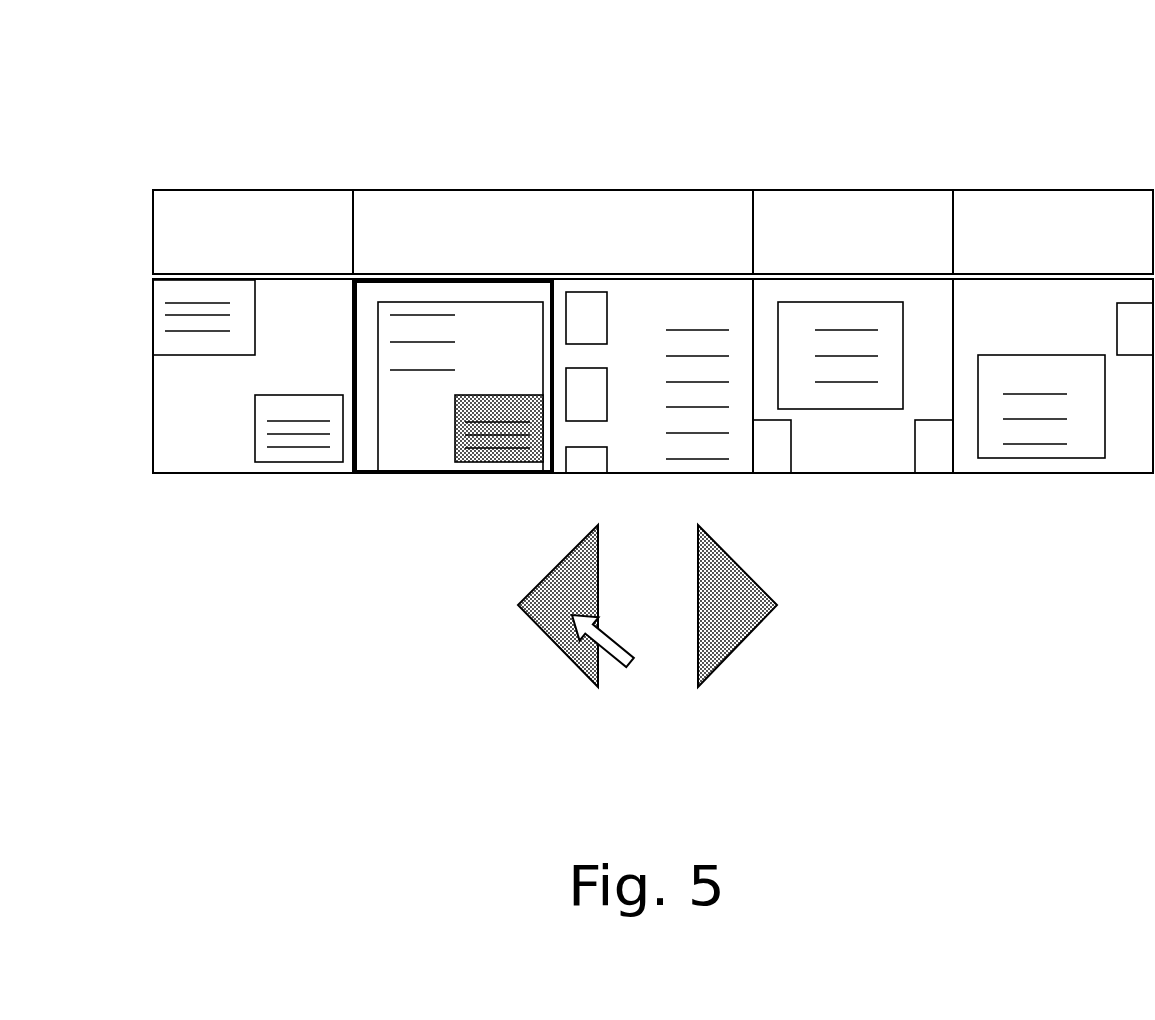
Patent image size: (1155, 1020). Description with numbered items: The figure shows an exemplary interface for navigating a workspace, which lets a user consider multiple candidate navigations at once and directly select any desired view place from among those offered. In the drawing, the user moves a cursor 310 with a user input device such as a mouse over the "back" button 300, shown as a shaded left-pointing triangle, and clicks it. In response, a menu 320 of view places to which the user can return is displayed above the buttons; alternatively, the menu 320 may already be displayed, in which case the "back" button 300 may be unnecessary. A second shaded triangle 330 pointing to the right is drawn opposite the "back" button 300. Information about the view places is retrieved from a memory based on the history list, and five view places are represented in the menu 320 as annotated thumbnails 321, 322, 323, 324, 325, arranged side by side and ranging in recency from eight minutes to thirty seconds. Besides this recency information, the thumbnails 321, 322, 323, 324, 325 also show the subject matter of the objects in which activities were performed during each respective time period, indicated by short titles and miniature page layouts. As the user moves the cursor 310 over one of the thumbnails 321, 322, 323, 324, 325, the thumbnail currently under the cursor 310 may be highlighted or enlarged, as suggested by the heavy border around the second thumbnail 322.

The menu 320 is at (880, 159).
The annotated thumbnail 321 is at (205, 463).
The annotated thumbnail 322 is at (395, 445).
The annotated thumbnail 323 is at (617, 463).
The annotated thumbnail 324 is at (837, 462).
The annotated thumbnail 325 is at (1043, 443).
The back button 300 is at (553, 602).
The cursor 310 is at (597, 637).
The right scroll control triangle 330 is at (757, 622).